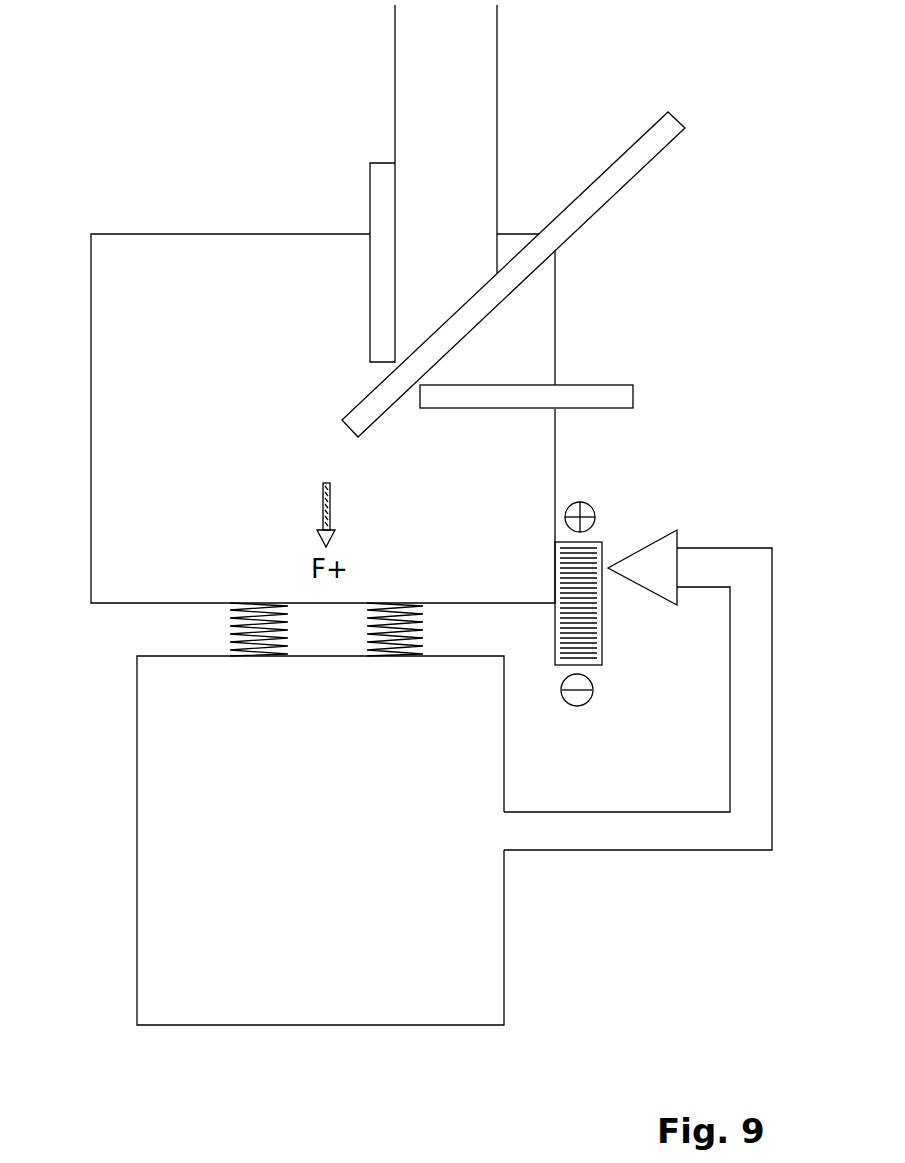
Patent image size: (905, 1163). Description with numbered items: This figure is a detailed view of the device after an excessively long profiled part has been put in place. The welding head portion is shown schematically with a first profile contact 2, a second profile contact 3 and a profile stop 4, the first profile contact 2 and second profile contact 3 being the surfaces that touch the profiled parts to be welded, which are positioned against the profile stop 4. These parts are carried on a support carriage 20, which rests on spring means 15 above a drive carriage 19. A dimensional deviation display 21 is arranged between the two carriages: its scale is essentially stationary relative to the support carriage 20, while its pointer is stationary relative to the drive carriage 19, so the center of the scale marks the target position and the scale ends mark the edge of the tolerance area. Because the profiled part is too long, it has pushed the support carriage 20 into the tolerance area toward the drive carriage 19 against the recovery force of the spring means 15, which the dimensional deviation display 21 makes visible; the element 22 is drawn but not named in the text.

The first profile contact 2 is at (380, 190).
The second profile contact 3 is at (597, 395).
The profile stop 4 is at (612, 180).
The spring means 15 is at (238, 632).
The drive carriage 19 is at (192, 917).
The support carriage 20 is at (158, 303).
The dimensional deviation display 21 is at (643, 518).
The rod 22 is at (466, 111).